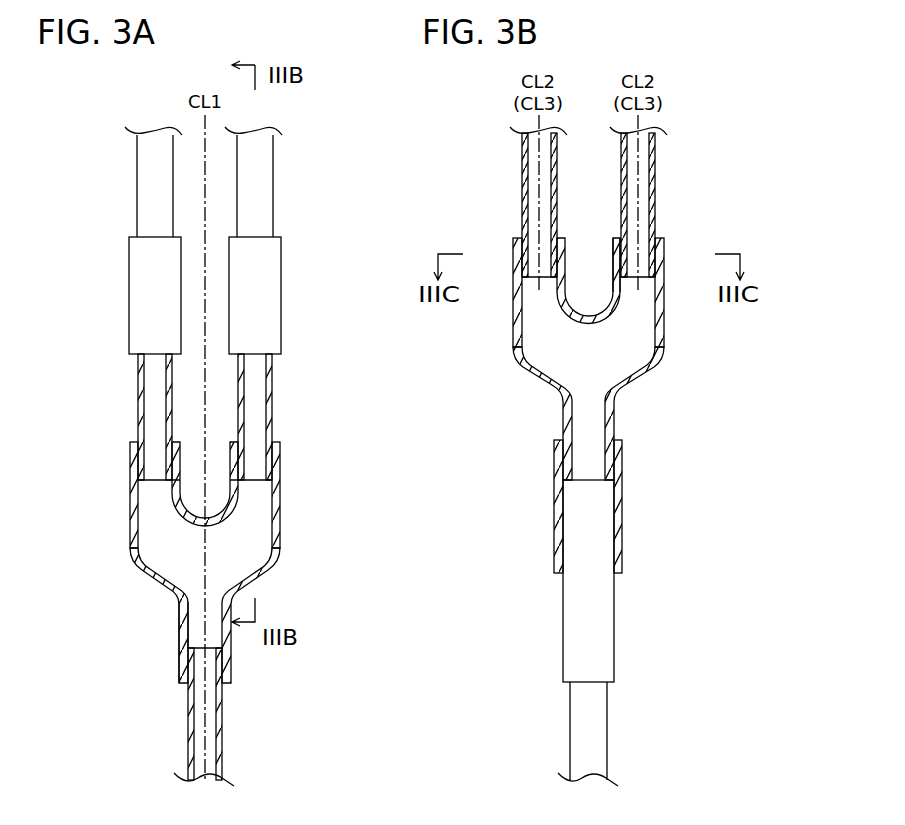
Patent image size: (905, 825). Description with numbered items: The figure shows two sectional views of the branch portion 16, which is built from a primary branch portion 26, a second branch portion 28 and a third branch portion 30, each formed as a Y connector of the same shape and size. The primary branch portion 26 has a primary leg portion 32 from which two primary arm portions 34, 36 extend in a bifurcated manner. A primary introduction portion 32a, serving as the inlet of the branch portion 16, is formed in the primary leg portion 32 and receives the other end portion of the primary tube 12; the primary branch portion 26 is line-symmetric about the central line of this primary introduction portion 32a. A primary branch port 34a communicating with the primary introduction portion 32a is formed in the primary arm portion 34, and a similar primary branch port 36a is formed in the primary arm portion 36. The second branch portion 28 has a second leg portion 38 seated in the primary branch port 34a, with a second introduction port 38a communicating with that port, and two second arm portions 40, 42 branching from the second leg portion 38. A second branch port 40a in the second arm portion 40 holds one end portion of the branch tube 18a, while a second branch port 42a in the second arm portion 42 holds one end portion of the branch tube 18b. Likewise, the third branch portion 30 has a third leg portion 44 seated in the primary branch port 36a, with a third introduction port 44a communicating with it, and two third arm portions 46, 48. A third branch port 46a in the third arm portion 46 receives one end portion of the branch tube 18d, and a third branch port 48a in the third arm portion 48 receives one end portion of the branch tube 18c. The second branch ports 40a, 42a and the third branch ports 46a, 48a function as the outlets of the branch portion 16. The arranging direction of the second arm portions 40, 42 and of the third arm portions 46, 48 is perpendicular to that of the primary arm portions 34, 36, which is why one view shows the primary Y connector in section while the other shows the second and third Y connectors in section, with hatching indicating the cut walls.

In FIG. 3A, the primary tube 12 is at (190, 730).
In FIG. 3B, the primary tube 12 is at (598, 730).
In FIG. 3A, the branch portion 16 is at (72, 263).
In FIG. 3B, the branch portion 16 is at (671, 516).
In FIG. 3A, the branch tube 18a is at (262, 170).
In FIG. 3B, the branch tube 18a is at (678, 202).
In FIG. 3B, the branch tube 18b is at (499, 202).
In FIG. 3B, the branch tube 18c is at (525, 148).
In FIG. 3A, the branch tube 18d is at (147, 170).
In FIG. 3B, the branch tube 18d is at (656, 150).
In FIG. 3A, the primary branch portion 26 is at (119, 570).
In FIG. 3B, the primary branch portion 26 is at (631, 601).
In FIG. 3A, the second branch portion 28 is at (292, 219).
In FIG. 3B, the second branch portion 28 is at (589, 303).
In FIG. 3A, the third branch portion 30 is at (118, 219).
In FIG. 3B, the third branch portion 30 is at (658, 388).
In FIG. 3A, the primary leg portion 32 is at (182, 665).
In FIG. 3B, the primary leg portion 32 is at (602, 645).
In FIG. 3A, the primary introduction portion 32a is at (197, 630).
In FIG. 3A, the primary arm portion 34 is at (282, 462).
In FIG. 3B, the primary arm portion 34 is at (555, 502).
In FIG. 3A, the primary branch port 34a is at (252, 497).
In FIG. 3B, the primary branch port 34a is at (578, 537).
In FIG. 3A, the primary arm portion 36 is at (135, 462).
In FIG. 3A, the primary branch port 36a is at (157, 497).
In FIG. 3A, the second leg portion 38 is at (272, 403).
In FIG. 3B, the second leg portion 38 is at (578, 413).
In FIG. 3A, the second introduction port 38a is at (252, 378).
In FIG. 3B, the second introduction port 38a is at (564, 413).
In FIG. 3A, the second arm portion 40 is at (262, 290).
In FIG. 3B, the second arm portion 40 is at (680, 281).
In FIG. 3B, the second branch port 40a is at (676, 304).
In FIG. 3B, the second arm portion 42 is at (525, 281).
In FIG. 3B, the second branch port 42a is at (529, 304).
In FIG. 3A, the third leg portion 44 is at (139, 403).
In FIG. 3B, the third leg portion 44 is at (613, 430).
In FIG. 3A, the third introduction port 44a is at (157, 378).
In FIG. 3B, the third introduction port 44a is at (582, 405).
In FIG. 3A, the third arm portion 46 is at (147, 290).
In FIG. 3B, the third arm portion 46 is at (660, 240).
In FIG. 3B, the third branch port 46a is at (633, 298).
In FIG. 3B, the third arm portion 48 is at (520, 240).
In FIG. 3B, the third branch port 48a is at (543, 298).